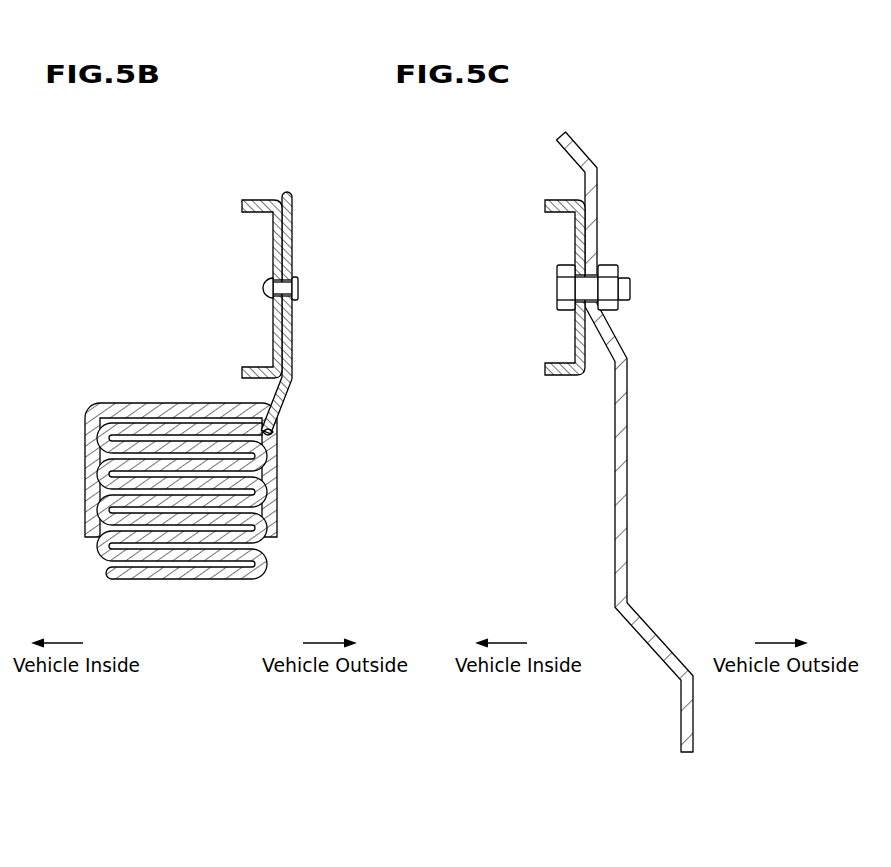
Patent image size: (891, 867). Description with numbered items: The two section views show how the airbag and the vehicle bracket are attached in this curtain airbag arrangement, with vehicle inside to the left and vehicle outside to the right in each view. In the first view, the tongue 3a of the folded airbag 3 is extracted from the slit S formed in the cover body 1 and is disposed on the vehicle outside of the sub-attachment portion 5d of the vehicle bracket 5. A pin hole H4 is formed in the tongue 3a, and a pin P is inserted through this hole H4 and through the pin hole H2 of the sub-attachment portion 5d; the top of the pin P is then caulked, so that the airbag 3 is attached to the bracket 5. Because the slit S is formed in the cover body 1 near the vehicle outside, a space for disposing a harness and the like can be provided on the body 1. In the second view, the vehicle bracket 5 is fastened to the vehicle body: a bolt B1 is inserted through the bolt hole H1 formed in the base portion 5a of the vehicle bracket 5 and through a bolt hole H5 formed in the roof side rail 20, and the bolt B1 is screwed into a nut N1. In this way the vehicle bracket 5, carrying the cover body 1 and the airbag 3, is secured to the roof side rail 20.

In FIG. 5B, the cover body 1 is at (126, 326).
In FIG. 5B, the airbag 3 is at (177, 580).
In FIG. 5B, the tongue 3a is at (290, 391).
In FIG. 5B, the slit S is at (277, 432).
In FIG. 5B, the vehicle bracket 5 is at (226, 289).
In FIG. 5C, the vehicle bracket 5 is at (528, 287).
In FIG. 5B, the sub-attachment portion 5d is at (273, 247).
In FIG. 5C, the base portion 5a is at (576, 237).
In FIG. 5B, the pin hole H2 is at (264, 290).
In FIG. 5B, the pin hole H4 is at (298, 289).
In FIG. 5B, the pin P is at (266, 298).
In FIG. 5C, the roof side rail 20 is at (575, 148).
In FIG. 5C, the bolt B1 is at (557, 279).
In FIG. 5C, the nut N1 is at (612, 307).
In FIG. 5C, the bolt hole H1 is at (563, 290).
In FIG. 5C, the bolt hole H5 is at (600, 283).